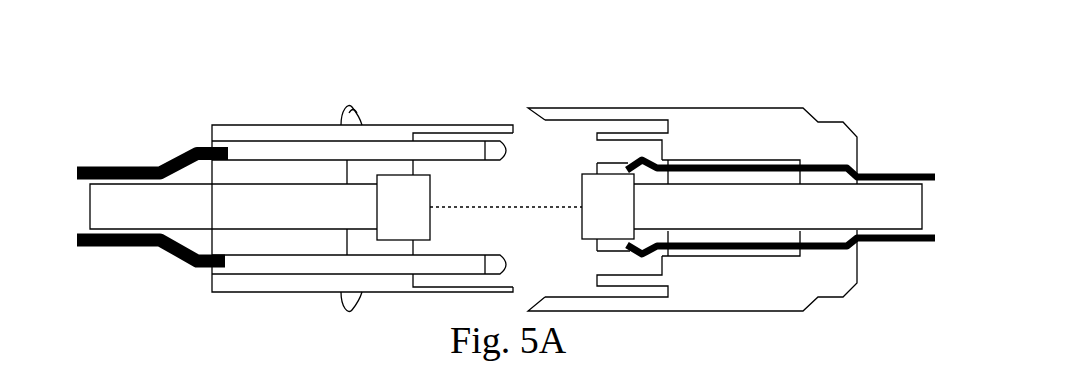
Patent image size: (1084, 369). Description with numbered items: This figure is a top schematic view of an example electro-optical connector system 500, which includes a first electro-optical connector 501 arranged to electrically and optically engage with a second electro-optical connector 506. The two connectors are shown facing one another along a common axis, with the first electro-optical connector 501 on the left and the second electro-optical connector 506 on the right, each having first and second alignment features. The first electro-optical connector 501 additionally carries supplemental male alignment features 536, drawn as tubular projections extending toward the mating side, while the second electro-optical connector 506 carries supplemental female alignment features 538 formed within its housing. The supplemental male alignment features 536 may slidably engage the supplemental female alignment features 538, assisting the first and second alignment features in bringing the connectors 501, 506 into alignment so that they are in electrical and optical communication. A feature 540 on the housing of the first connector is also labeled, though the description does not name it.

The electro-optical connector system 500 is at (122, 73).
The first electro-optical connector 501 is at (263, 116).
The second electro-optical connector 506 is at (768, 93).
The supplemental male alignment features 536 is at (450, 124).
The supplemental female alignment features 538 is at (626, 118).
The latch projection 540 is at (343, 108).